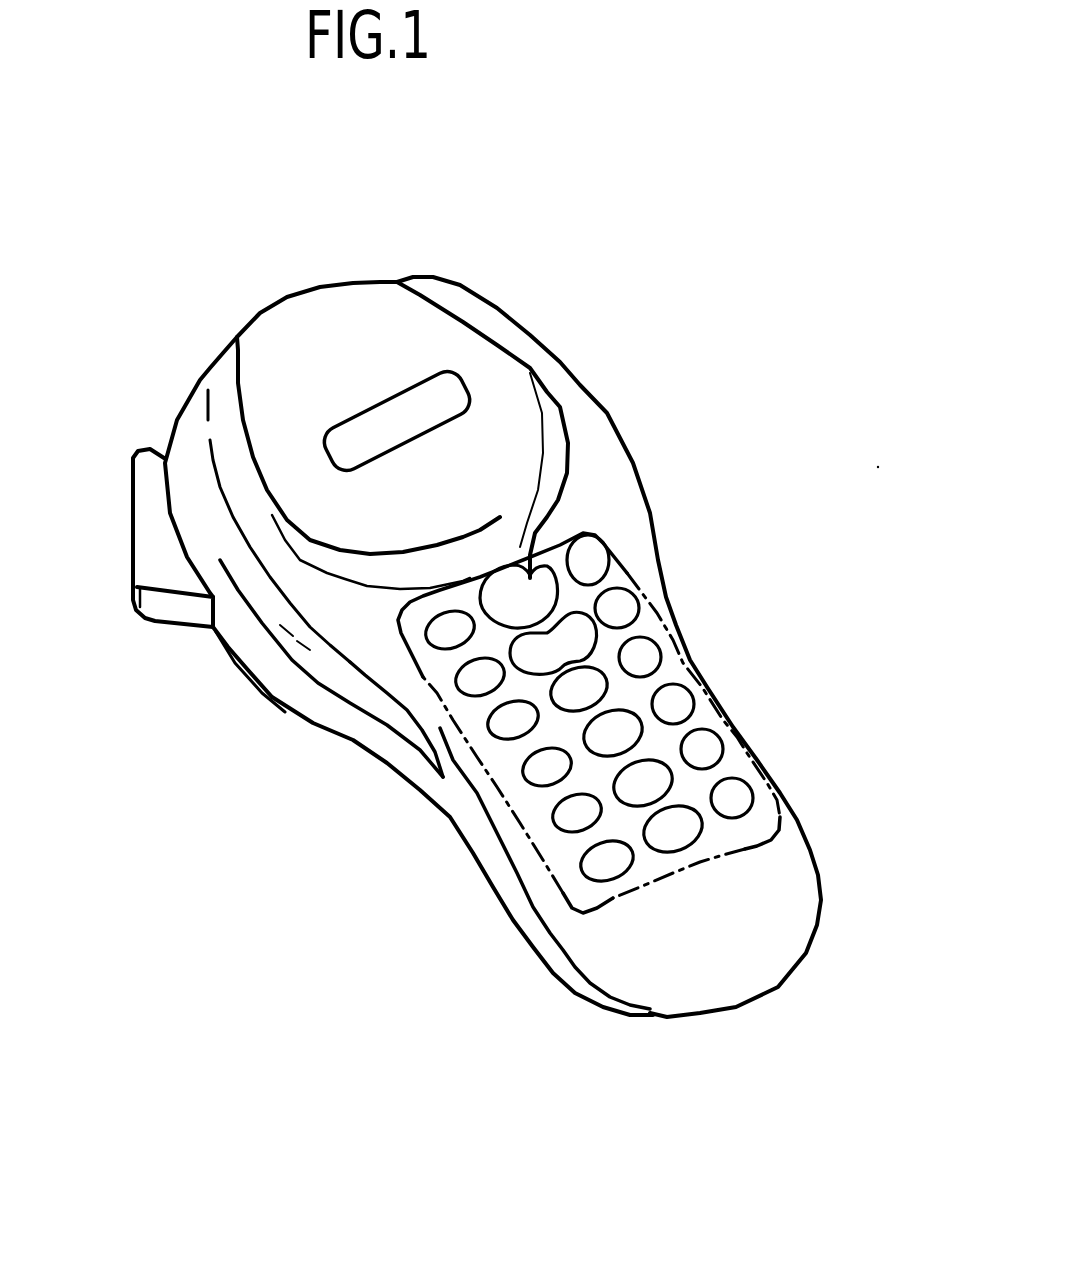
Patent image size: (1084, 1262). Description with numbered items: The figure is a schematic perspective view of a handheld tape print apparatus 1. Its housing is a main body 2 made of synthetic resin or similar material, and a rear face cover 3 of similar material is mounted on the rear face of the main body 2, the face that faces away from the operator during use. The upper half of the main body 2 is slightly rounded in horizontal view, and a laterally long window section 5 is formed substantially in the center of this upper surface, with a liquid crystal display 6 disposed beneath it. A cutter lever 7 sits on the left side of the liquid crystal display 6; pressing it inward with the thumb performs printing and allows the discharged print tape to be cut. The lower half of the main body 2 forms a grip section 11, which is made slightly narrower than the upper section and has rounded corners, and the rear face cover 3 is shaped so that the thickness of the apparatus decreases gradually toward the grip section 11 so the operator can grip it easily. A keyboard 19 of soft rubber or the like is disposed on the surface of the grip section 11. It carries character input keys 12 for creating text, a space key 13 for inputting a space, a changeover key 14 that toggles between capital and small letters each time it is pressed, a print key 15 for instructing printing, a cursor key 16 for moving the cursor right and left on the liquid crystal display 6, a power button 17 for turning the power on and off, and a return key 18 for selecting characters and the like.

The tape print apparatus 1 is at (373, 410).
The main body 2 is at (517, 647).
The rear face cover 3 is at (331, 697).
The window section 5 is at (378, 417).
The liquid crystal display 6 is at (384, 450).
The cutter lever 7 is at (137, 538).
The grip section 11 is at (733, 546).
The character input keys 12 is at (615, 788).
The space key 13 is at (754, 909).
The changeover key 14 is at (805, 804).
The print key 15 is at (589, 513).
The cursor key 16 is at (631, 553).
The power button 17 is at (645, 534).
The return key 18 is at (678, 601).
The keyboard 19 is at (646, 982).